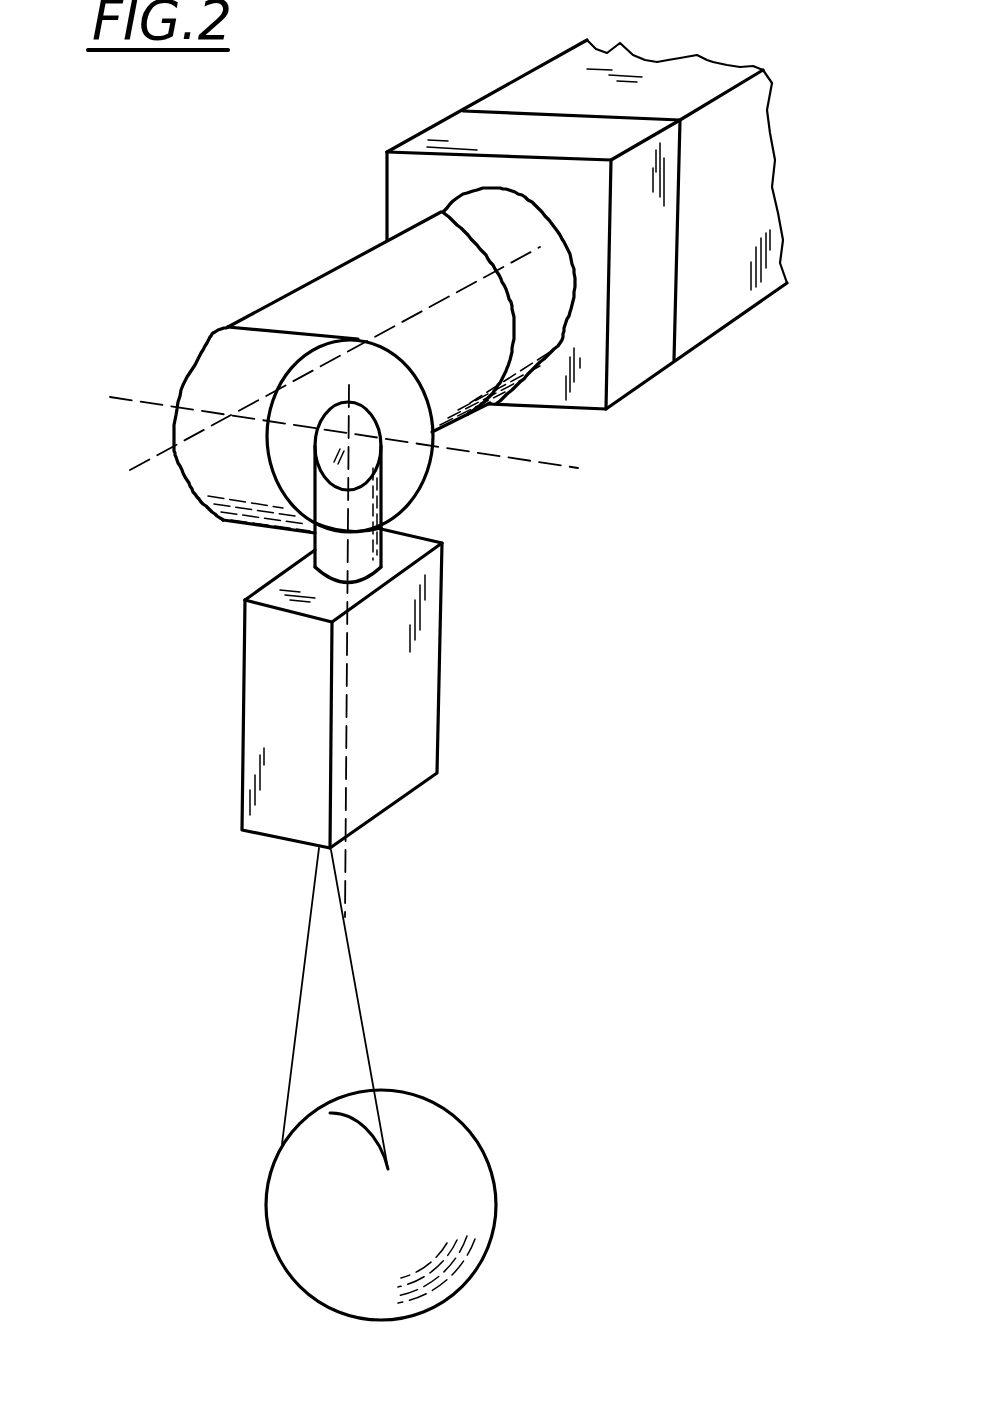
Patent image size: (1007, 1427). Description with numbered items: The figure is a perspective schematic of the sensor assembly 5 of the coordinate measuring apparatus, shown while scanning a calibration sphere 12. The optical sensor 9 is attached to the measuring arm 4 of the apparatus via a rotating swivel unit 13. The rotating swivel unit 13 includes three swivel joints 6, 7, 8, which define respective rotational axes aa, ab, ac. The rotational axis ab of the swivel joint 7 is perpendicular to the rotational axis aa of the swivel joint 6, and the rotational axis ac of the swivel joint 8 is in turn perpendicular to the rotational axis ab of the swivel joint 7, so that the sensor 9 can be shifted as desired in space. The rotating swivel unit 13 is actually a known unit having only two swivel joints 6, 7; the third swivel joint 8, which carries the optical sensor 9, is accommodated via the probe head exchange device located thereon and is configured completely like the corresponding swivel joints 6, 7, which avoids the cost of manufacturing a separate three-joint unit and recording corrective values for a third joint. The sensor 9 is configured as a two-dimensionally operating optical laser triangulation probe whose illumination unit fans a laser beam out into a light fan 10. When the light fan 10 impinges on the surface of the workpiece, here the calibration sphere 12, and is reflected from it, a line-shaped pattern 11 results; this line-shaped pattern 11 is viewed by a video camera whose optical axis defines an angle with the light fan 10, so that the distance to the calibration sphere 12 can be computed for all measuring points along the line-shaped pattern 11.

The measuring arm 4 is at (537, 83).
The sensor assembly 5 is at (490, 477).
The swivel joint 6 is at (443, 212).
The swivel joint 7 is at (286, 379).
The swivel joint 8 is at (388, 512).
The optical sensor 9 is at (253, 708).
The light fan 10 is at (357, 966).
The line-shaped pattern 11 is at (346, 1109).
The calibration sphere 12 is at (471, 1159).
The rotating swivel unit 13 is at (222, 305).
The rotational axis aa is at (145, 468).
The rotational axis ab is at (113, 397).
The rotational axis ac is at (343, 760).